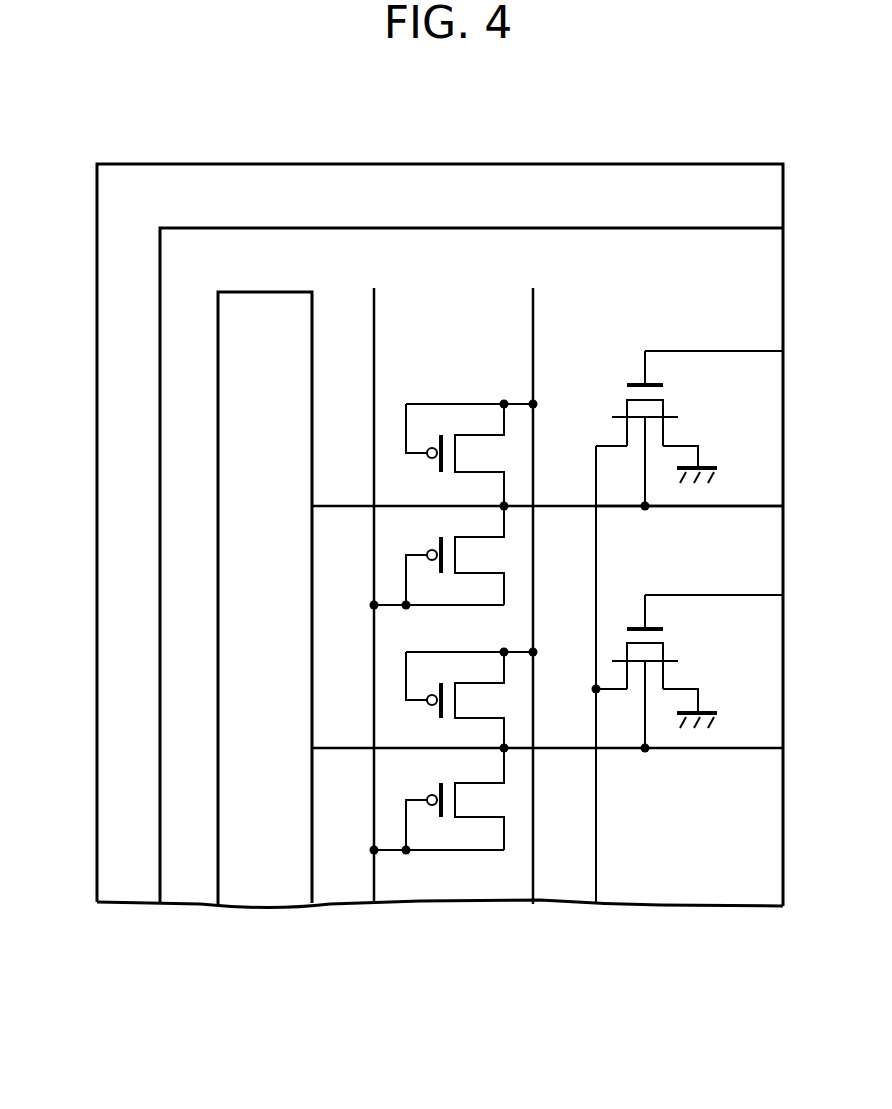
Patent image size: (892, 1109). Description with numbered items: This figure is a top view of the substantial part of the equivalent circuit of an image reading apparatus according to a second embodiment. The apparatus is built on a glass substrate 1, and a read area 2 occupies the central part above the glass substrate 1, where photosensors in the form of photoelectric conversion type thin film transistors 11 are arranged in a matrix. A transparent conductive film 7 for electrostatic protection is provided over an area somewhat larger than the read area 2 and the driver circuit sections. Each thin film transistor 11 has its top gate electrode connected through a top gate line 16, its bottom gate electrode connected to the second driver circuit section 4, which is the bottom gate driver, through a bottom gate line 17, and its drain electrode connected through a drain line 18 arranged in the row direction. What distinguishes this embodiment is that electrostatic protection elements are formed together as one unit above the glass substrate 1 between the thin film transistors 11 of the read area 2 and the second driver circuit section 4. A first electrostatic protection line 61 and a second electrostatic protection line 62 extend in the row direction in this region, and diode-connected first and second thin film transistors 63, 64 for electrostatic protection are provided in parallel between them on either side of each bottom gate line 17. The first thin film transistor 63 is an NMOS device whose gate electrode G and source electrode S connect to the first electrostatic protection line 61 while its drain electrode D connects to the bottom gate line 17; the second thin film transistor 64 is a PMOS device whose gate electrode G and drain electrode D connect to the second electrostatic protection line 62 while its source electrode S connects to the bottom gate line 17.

The glass substrate 1 is at (782, 163).
The read area 2 is at (641, 293).
The second driver circuit section 4 is at (250, 423).
The transparent conductive film 7 is at (250, 240).
The photoelectric conversion type thin film transistor 11 is at (606, 384).
The top gate line 16 is at (732, 351).
The bottom gate line 17 is at (713, 507).
The drain line 18 is at (597, 558).
The first electrostatic protection line 61 is at (374, 322).
The second electrostatic protection line 62 is at (533, 322).
The first thin film transistor for electrostatic protection 63 is at (438, 608).
The second thin film transistor for electrostatic protection 64 is at (446, 388).